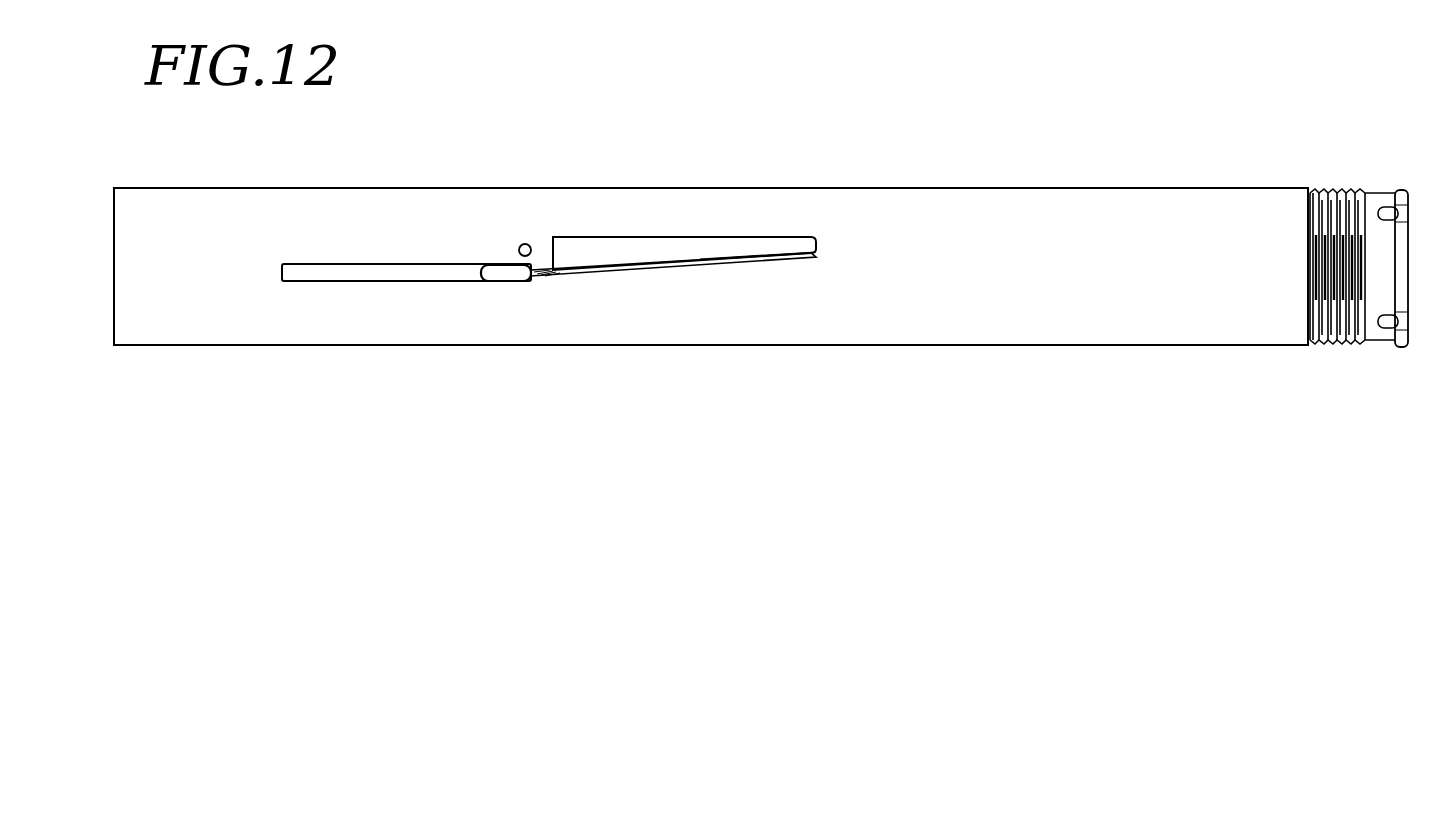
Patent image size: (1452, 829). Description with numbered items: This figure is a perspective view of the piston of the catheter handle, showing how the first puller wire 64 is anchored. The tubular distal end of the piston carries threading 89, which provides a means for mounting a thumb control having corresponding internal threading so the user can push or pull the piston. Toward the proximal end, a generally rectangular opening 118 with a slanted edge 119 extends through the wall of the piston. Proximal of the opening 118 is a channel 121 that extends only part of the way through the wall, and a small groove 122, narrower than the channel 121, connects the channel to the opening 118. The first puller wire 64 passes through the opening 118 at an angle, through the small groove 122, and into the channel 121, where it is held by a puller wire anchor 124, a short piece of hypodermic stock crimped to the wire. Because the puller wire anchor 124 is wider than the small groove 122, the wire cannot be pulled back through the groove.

The first puller wire 64 is at (636, 262).
The threading 89 is at (1338, 340).
The opening 118 is at (757, 247).
The slanted edge 119 is at (735, 262).
The channel 121 is at (335, 277).
The small groove 122 is at (547, 265).
The puller wire anchor 124 is at (510, 272).